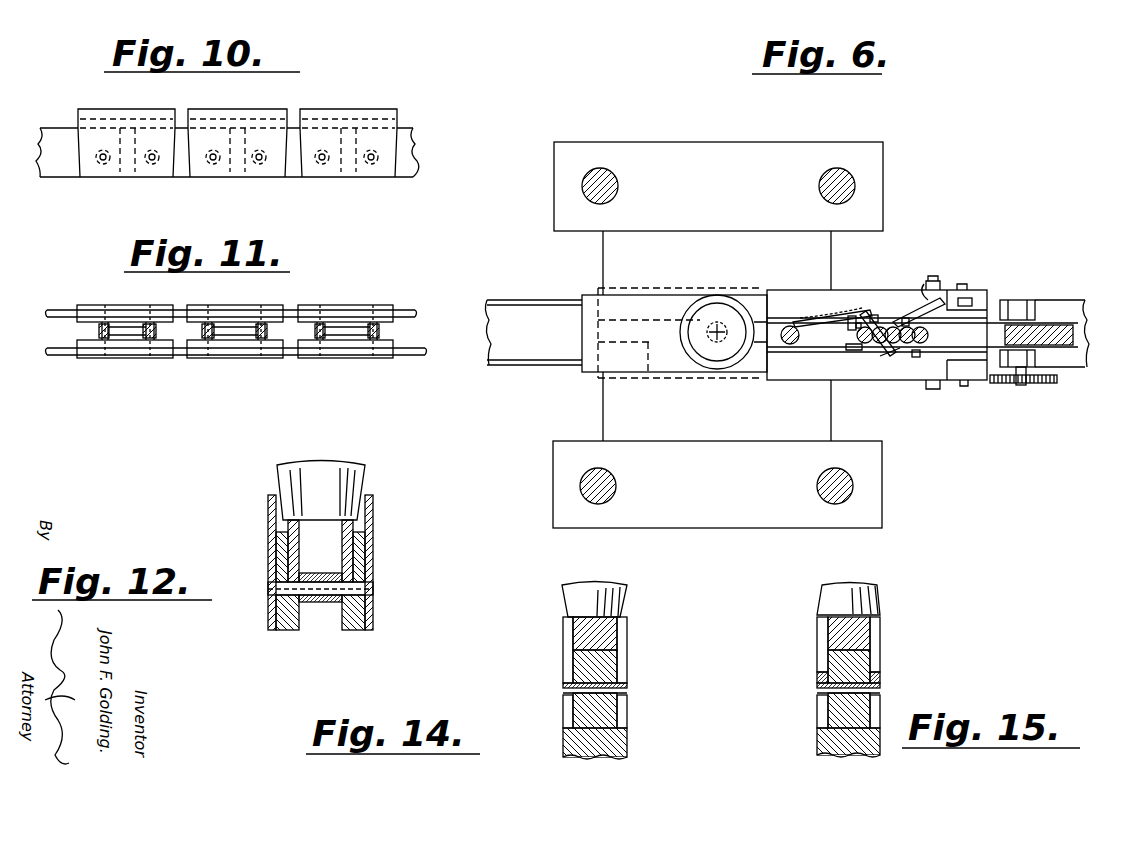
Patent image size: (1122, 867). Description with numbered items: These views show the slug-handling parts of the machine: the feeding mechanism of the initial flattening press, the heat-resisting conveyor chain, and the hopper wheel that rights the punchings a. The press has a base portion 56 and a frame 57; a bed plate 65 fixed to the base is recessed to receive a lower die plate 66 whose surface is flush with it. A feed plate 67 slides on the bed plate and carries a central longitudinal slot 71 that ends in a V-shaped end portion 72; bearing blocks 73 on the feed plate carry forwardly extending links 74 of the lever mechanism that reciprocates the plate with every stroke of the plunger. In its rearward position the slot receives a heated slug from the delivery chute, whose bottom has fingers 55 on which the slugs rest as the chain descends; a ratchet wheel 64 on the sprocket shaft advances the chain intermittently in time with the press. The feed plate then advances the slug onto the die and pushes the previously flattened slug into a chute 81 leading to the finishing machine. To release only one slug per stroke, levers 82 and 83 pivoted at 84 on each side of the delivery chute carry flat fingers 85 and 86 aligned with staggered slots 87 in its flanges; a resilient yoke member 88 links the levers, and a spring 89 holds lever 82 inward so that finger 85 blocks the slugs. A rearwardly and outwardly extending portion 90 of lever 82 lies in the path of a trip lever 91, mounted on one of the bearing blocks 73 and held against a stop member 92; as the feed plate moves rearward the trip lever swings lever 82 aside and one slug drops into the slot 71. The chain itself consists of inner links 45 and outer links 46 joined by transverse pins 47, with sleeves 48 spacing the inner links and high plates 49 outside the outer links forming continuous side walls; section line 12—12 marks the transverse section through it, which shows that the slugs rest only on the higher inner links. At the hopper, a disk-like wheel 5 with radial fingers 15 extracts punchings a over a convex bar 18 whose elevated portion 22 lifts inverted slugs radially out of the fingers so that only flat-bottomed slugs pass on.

In FIG. 14, the wheel 5 is at (592, 710).
In FIG. 15, the wheel 5 is at (848, 712).
In FIG. 14, the finger 15 is at (568, 672).
In FIG. 15, the finger 15 is at (878, 676).
In FIG. 14, the convex bar 18 is at (605, 641).
In FIG. 15, the convex bar 18 is at (845, 650).
In FIG. 14, the elevated portion 22 is at (575, 622).
In FIG. 15, the elevated portion 22 is at (865, 626).
In FIG. 11, the section line 12— 12 is at (323, 407).
In FIG. 11, the inner links 45 is at (126, 322).
In FIG. 12, the inner links 45 is at (342, 562).
In FIG. 10, the outer links 46 is at (57, 127).
In FIG. 11, the outer links 46 is at (98, 305).
In FIG. 12, the outer links 46 is at (278, 555).
In FIG. 11, the pins 47 is at (110, 360).
In FIG. 12, the pins 47 is at (328, 596).
In FIG. 11, the sleeves 48 is at (140, 331).
In FIG. 12, the sleeves 48 is at (312, 603).
In FIG. 10, the plate 49 is at (109, 109).
In FIG. 11, the plate 49 is at (360, 306).
In FIG. 12, the plate 49 is at (268, 505).
In FIG. 6, the fingers 55 is at (1030, 330).
In FIG. 6, the base portion 56 is at (717, 336).
In FIG. 6, the frame 57 is at (718, 335).
In FIG. 6, the ratchet wheel 64 is at (1035, 385).
In FIG. 6, the bed plate 65 is at (645, 300).
In FIG. 6, the lower die plate 66 is at (727, 318).
In FIG. 6, the feed plate 67 is at (866, 298).
In FIG. 6, the slot 71 is at (647, 373).
In FIG. 6, the V-shaped end portion 72 is at (727, 350).
In FIG. 6, the bearing blocks 73 is at (981, 293).
In FIG. 6, the links 74 is at (941, 282).
In FIG. 6, the chute 81 is at (556, 346).
In FIG. 6, the lever 82 is at (876, 316).
In FIG. 6, the lever 83 is at (893, 358).
In FIG. 6, the pivot 84 is at (905, 318).
In FIG. 6, the finger 85 is at (845, 313).
In FIG. 6, the finger 86 is at (880, 352).
In FIG. 6, the slots 87 is at (856, 327).
In FIG. 6, the resilient yoke member 88 is at (848, 348).
In FIG. 6, the spring 89 is at (852, 316).
In FIG. 6, the rearwardly and outwardly extending portion 90 is at (931, 297).
In FIG. 6, the trip lever 91 is at (926, 298).
In FIG. 6, the stop member 92 is at (966, 298).
In FIG. 12, the punchings a is at (330, 462).
In FIG. 6, the punchings a is at (790, 345).
In FIG. 14, the punchings a is at (620, 590).
In FIG. 15, the punchings a is at (868, 592).